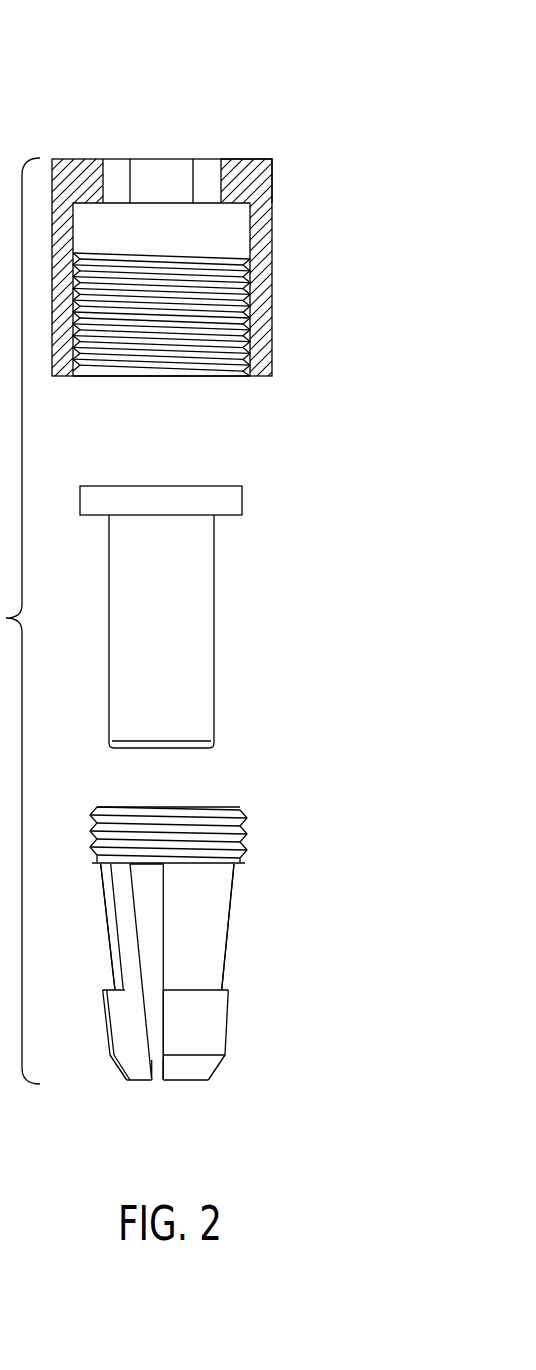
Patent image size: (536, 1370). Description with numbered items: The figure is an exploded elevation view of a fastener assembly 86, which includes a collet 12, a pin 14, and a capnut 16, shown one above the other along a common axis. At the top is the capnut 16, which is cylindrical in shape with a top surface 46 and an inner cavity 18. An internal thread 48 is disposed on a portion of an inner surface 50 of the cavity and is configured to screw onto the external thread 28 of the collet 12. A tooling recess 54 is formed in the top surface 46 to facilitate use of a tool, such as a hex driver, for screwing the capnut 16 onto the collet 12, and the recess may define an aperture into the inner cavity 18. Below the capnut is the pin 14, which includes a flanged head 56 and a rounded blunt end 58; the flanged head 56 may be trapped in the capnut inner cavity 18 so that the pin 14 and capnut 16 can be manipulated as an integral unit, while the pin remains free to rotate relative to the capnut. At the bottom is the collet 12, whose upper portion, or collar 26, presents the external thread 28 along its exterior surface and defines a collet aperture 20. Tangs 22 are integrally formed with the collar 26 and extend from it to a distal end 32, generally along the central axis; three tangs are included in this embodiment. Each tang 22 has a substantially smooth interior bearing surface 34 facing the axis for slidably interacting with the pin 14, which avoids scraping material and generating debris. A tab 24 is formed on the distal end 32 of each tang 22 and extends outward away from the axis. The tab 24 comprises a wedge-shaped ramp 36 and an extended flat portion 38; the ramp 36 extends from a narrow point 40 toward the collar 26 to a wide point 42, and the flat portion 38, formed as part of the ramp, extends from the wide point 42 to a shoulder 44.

The fastener assembly 86 is at (199, 77).
The capnut 16 is at (276, 262).
The top surface 46 is at (248, 158).
The tooling recess 54 is at (118, 165).
The inner surface 50 is at (77, 228).
The internal thread 48 is at (222, 360).
The inner cavity 18 is at (157, 378).
The pin 14 is at (271, 624).
The flanged head 56 is at (236, 500).
The rounded blunt end 58 is at (213, 747).
The collet 12 is at (273, 918).
The external thread 28 is at (250, 812).
The collet aperture 20 is at (115, 806).
The collar 26 is at (240, 862).
The interior bearing surface 34 is at (142, 908).
The tang 22 is at (108, 906).
The shoulder 44 is at (115, 987).
The flat portion 38 is at (105, 1020).
The tab 24 is at (210, 1040).
The wide point 42 is at (112, 1060).
The ramp 36 is at (110, 1065).
The narrow point 40 is at (122, 1081).
The distal end 32 is at (140, 1087).